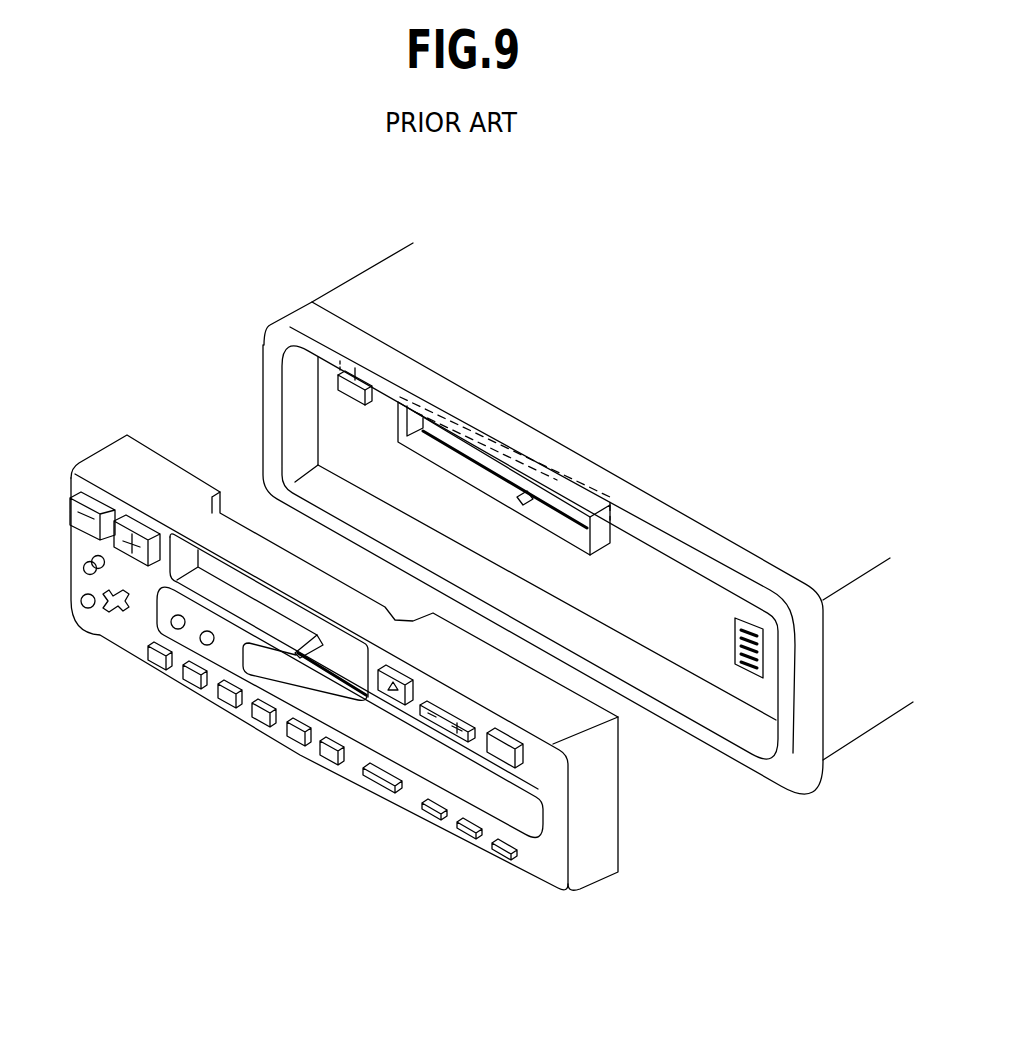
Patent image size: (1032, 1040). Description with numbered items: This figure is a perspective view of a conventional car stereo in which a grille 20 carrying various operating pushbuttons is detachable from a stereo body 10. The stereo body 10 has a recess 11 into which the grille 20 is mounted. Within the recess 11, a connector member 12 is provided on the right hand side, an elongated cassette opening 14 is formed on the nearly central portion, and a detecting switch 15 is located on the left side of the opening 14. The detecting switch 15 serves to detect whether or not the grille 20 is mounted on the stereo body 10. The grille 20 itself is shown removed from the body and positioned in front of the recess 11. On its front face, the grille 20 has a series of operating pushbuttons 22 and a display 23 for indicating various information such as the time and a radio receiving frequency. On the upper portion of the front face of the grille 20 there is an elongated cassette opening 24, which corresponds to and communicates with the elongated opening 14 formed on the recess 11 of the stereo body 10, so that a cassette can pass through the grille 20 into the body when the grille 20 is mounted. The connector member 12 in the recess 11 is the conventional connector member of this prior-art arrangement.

The stereo body 10 is at (298, 268).
The recess 11 is at (627, 575).
The connector member 12 is at (753, 672).
The elongated cassette opening 14 is at (497, 470).
The detecting switch 15 is at (366, 368).
The grille 20 is at (98, 436).
The operating pushbuttons 22 is at (497, 873).
The display 23 is at (510, 806).
The elongated cassette opening 24 is at (207, 583).